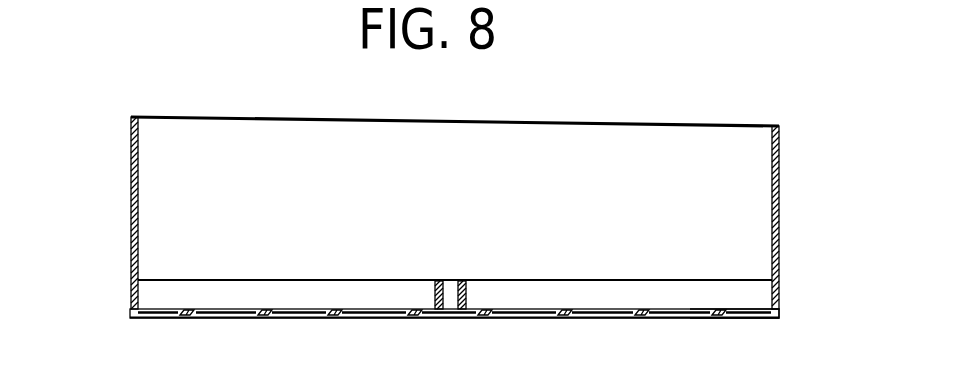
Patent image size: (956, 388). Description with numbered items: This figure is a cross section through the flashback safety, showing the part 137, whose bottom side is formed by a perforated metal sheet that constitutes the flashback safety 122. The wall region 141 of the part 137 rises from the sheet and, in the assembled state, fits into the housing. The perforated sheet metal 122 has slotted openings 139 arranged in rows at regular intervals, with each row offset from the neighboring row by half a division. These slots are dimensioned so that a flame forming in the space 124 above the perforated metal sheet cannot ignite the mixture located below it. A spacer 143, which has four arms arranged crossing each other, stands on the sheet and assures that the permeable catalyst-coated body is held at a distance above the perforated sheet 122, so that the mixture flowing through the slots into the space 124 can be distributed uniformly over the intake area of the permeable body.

The wall region 141 is at (130, 177).
The part 137 is at (780, 178).
The flashback safety 122 is at (155, 320).
The spacer 143 is at (305, 297).
The space 124 is at (603, 295).
The slotted openings 139 is at (698, 319).